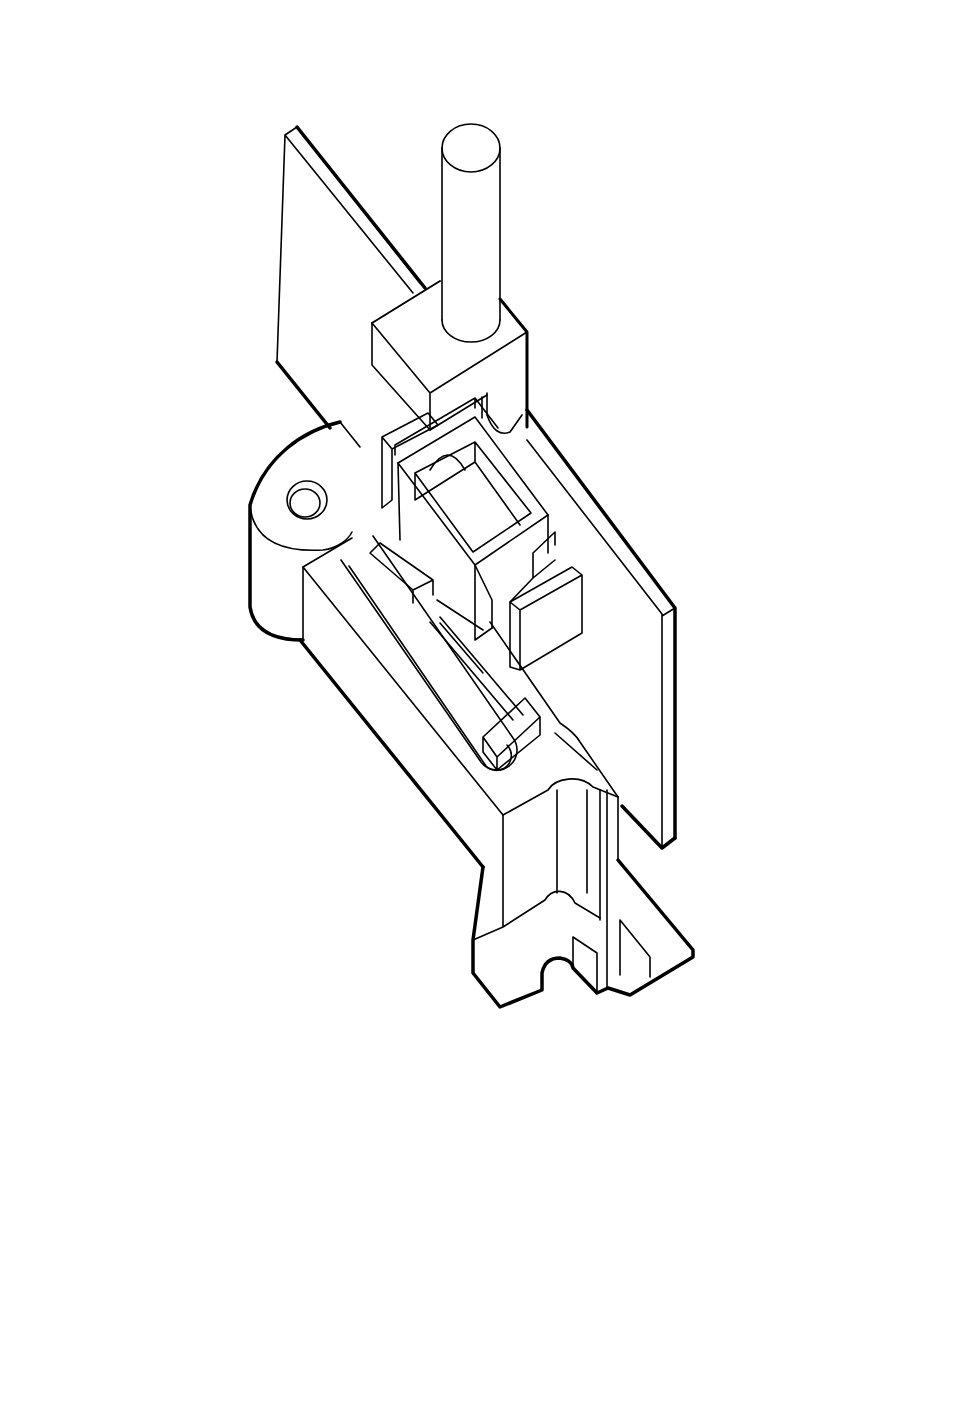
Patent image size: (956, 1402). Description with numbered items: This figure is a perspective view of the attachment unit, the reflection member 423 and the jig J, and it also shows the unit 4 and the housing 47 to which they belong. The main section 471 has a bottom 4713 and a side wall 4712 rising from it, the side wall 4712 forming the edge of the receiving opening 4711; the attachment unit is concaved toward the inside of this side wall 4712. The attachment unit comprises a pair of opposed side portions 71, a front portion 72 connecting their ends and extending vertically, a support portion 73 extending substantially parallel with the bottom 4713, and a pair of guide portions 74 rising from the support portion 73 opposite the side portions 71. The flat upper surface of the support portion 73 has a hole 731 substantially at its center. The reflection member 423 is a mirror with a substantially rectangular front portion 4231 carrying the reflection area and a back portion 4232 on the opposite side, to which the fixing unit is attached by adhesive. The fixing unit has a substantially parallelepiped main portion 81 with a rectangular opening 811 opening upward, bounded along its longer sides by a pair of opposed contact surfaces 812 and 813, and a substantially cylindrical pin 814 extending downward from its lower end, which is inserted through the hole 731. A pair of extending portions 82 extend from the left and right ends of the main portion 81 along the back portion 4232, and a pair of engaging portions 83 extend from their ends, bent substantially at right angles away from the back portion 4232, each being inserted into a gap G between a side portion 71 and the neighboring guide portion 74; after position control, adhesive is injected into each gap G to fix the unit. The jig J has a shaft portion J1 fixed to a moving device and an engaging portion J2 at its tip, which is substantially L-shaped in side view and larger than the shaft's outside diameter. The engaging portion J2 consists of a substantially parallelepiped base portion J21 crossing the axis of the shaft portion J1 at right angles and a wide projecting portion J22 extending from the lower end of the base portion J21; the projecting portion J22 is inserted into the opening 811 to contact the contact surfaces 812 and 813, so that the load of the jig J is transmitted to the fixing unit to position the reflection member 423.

The sensor unit 4 is at (153, 466).
The reflection member 423 is at (292, 126).
The front portion 4231 is at (317, 142).
The back portion 4232 is at (292, 234).
The jig J is at (579, 206).
The shaft portion J1 is at (487, 235).
The engaging portion J2 is at (510, 312).
The base portion J21 is at (517, 370).
The projecting portion J22 is at (512, 407).
The base 47 is at (388, 752).
The main section 471 is at (448, 644).
The receiving opening 4711 is at (481, 866).
The side wall 4712 is at (613, 897).
The bottom 4713 is at (690, 905).
The side portions 71 is at (303, 595).
The front portion 72 is at (420, 700).
The support portion 73 is at (482, 684).
The hole 731 is at (538, 718).
The guide portions 74 is at (352, 640).
The gap G is at (397, 583).
The main portion 81 is at (400, 510).
The opening 811 is at (498, 512).
The contact surface 812 is at (498, 462).
The contact surface 813 is at (456, 615).
The pin 814 is at (505, 595).
The extending portions 82 is at (427, 405).
The engaging portions 83 is at (380, 440).